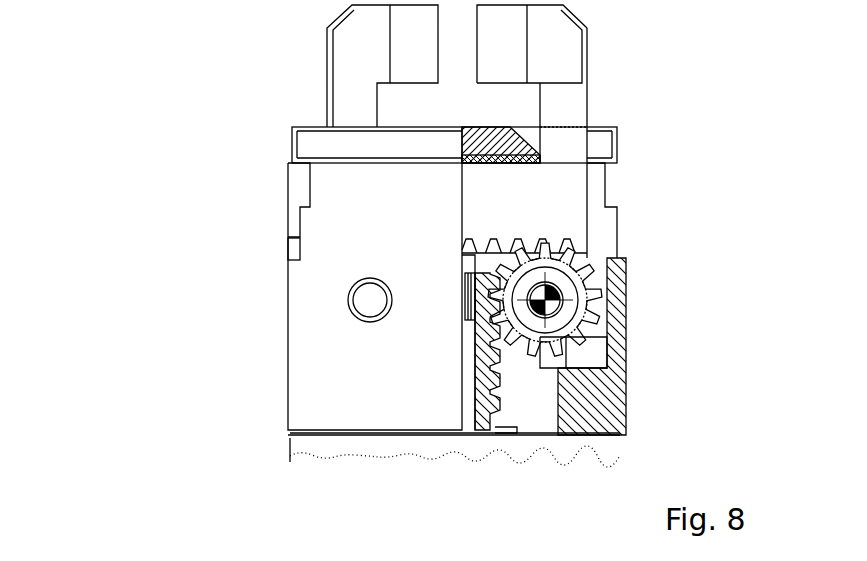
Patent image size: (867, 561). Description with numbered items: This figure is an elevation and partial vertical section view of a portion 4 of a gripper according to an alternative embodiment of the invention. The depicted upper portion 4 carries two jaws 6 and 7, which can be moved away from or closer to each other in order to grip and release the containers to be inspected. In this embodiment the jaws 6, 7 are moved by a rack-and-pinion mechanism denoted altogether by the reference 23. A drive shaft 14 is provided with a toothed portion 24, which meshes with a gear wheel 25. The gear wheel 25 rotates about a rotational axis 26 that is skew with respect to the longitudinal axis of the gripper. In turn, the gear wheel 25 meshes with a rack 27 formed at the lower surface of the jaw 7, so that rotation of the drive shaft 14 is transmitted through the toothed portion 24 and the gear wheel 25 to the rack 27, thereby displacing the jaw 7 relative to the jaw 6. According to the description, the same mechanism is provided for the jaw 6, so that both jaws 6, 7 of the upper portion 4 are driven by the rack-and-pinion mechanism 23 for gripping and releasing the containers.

The upper portion 4 is at (168, 233).
The jaw 6 is at (347, 100).
The jaw 7 is at (577, 100).
The drive shaft 14 is at (505, 417).
The rack-and-pinion mechanism 23 is at (588, 258).
The toothed portion 24 is at (500, 373).
The gear wheel 25 is at (587, 352).
The rotational axis 26 is at (547, 302).
The rack 27 is at (553, 248).